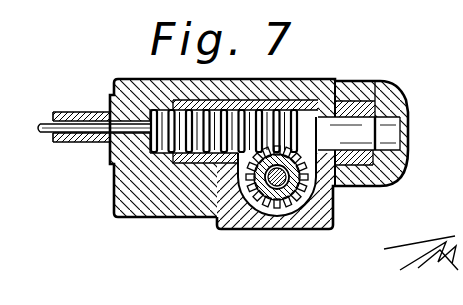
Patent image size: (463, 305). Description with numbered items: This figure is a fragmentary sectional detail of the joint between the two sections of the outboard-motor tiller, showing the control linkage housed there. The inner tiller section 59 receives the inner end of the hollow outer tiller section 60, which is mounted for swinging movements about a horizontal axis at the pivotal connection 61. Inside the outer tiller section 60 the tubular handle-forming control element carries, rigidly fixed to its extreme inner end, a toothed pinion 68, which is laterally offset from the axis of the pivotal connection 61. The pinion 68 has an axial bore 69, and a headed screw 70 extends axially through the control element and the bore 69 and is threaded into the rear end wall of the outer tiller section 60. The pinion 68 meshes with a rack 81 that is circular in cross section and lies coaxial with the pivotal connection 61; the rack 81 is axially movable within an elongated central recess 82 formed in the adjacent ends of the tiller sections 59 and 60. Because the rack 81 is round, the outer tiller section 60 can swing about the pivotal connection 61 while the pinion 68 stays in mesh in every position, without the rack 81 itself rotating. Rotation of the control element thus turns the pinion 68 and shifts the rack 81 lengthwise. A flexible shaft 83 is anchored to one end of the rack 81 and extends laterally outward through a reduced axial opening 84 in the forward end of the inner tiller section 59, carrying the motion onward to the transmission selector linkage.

The inner tiller section 59 is at (128, 210).
The outer tiller section 60 is at (257, 231).
The pivotal connection 61 is at (355, 130).
The toothed pinion 68 is at (280, 192).
The axial bore 69 is at (289, 192).
The headed screw 70 is at (274, 190).
The rack 81 is at (292, 102).
The elongated central recess 82 is at (386, 106).
The flexible shaft 83 is at (42, 129).
The reduced axial opening 84 is at (117, 173).